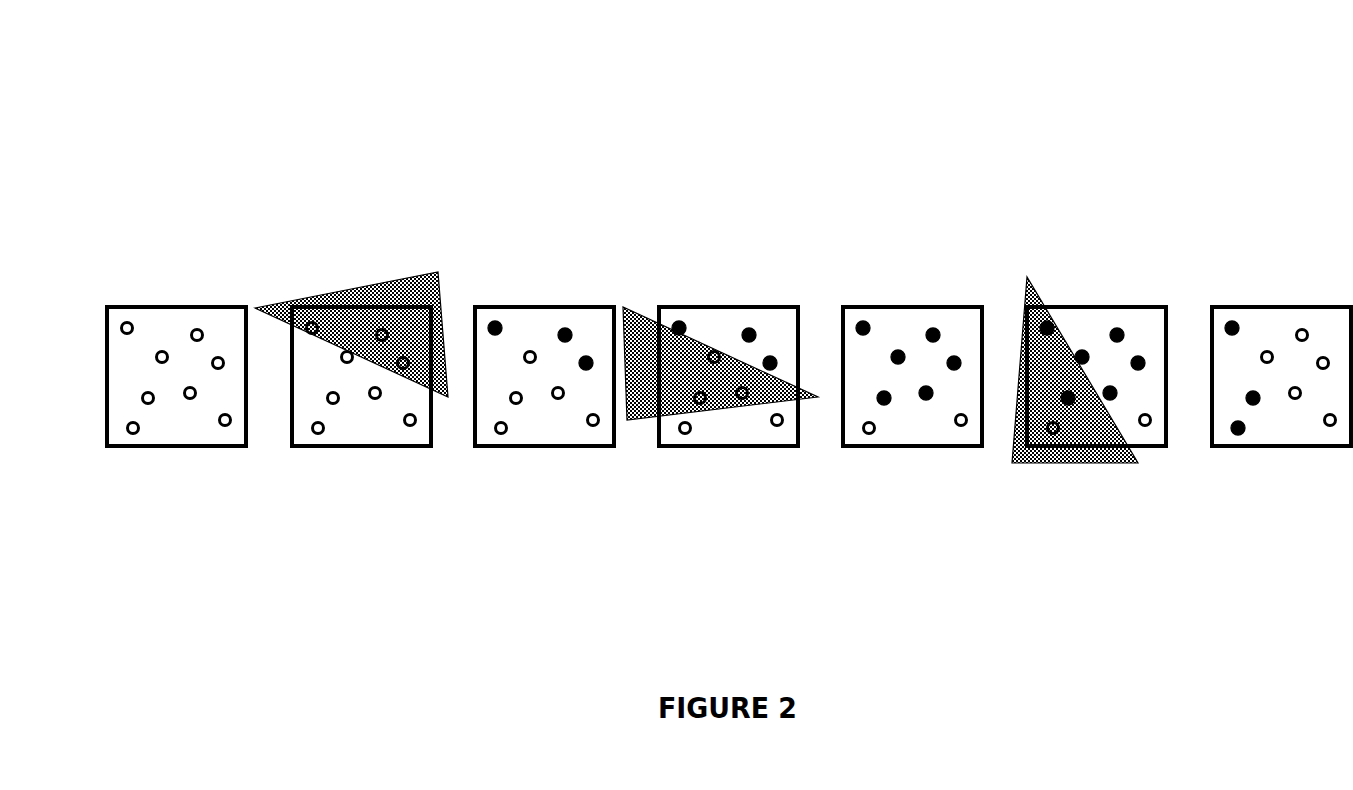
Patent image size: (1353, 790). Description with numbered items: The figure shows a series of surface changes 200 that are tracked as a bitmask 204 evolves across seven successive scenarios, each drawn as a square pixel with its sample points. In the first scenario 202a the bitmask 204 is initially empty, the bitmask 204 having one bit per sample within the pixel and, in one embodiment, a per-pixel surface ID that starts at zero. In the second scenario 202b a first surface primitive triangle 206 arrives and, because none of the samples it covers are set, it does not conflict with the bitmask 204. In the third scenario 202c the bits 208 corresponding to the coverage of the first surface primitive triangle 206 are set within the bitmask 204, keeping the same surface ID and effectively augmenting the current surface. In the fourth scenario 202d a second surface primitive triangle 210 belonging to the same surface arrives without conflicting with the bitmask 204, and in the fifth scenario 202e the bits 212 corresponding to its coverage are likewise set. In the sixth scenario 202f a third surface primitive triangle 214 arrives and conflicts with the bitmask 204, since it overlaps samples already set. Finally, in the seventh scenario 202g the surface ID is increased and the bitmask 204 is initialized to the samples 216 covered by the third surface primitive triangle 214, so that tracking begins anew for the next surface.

The series of surface changes 200 is at (1025, 111).
The first scenario 202a is at (175, 474).
The second scenario 202b is at (351, 382).
The third scenario 202c is at (524, 400).
The fourth scenario 202d is at (720, 401).
The fifth scenario 202e is at (908, 407).
The sixth scenario 202f is at (1073, 393).
The seventh scenario 202g is at (1254, 401).
The bitmask 204 is at (178, 306).
The first surface primitive triangle 206 is at (347, 288).
The bits 208 is at (583, 364).
The second surface primitive triangle 210 is at (641, 309).
The bits 212 is at (926, 393).
The third surface primitive triangle 214 is at (1028, 279).
The samples 216 is at (1238, 427).